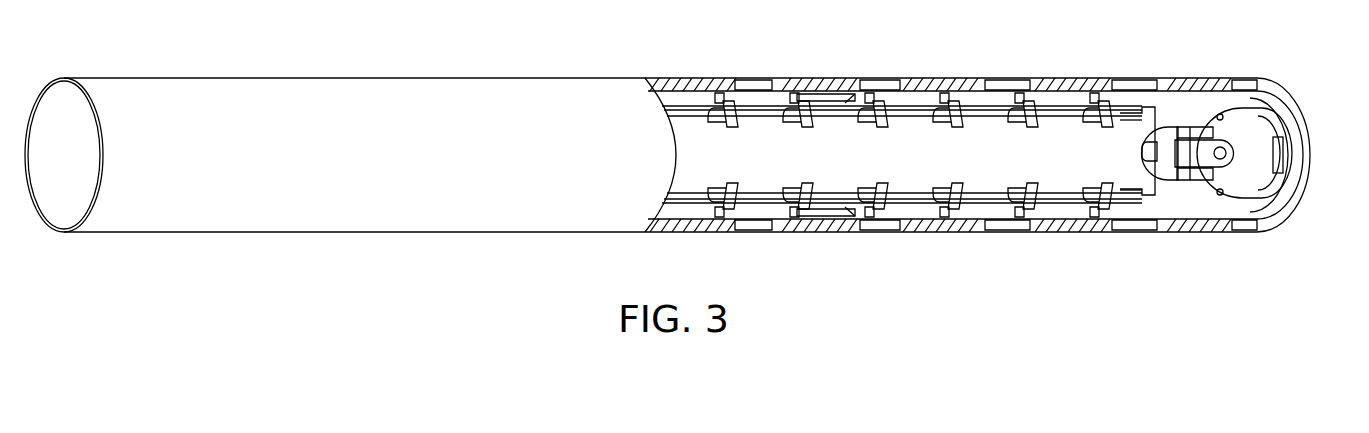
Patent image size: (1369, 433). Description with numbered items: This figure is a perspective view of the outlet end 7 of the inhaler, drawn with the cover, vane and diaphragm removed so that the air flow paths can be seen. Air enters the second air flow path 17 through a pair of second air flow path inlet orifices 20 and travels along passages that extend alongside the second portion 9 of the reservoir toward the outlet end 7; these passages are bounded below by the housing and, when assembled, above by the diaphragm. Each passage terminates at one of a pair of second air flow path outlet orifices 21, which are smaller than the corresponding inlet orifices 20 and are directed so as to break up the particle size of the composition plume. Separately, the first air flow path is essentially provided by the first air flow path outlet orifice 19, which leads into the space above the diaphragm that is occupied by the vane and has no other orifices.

The outlet end 7 is at (1290, 93).
The second portion of the reservoir 9 is at (908, 155).
The second air flow path 17 is at (985, 107).
The first air flow path outlet orifice 19 is at (1266, 205).
The second air flow path inlet orifices 20 is at (833, 97).
The second air flow path outlet orifices 21 is at (1220, 114).